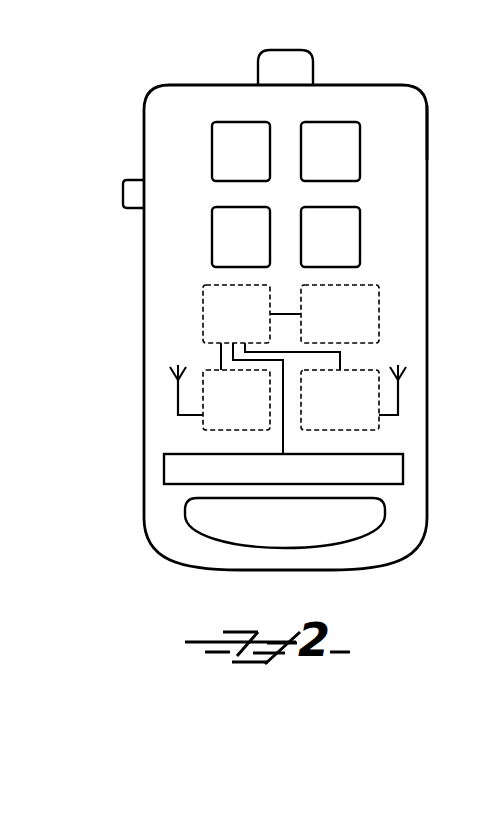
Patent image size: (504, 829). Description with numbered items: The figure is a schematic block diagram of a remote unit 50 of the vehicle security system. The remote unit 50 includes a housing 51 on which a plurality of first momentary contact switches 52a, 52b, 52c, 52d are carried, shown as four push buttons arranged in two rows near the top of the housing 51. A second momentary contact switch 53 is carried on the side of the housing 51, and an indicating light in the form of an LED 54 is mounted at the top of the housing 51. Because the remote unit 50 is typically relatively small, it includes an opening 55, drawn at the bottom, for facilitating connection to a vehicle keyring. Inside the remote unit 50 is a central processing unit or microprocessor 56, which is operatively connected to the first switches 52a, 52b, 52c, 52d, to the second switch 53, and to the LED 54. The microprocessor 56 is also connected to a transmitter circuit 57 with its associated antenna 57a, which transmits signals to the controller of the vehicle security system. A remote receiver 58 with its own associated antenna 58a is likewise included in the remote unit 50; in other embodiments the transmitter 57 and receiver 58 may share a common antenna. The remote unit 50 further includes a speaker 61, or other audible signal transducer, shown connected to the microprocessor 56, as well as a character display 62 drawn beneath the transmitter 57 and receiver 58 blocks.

The remote unit 50 is at (438, 81).
The housing 51 is at (428, 135).
The first momentary contact switch 52a is at (228, 122).
The first momentary contact switch 52b is at (335, 122).
The first momentary contact switch 52c is at (212, 221).
The first momentary contact switch 52d is at (360, 215).
The second momentary contact switch 53 is at (126, 180).
The LED 54 is at (290, 50).
The opening 55 is at (313, 527).
The microprocessor 56 is at (203, 300).
The transmitter circuit 57 is at (200, 428).
The antenna 57a is at (178, 402).
The remote receiver 58 is at (379, 428).
The antenna 58a is at (398, 395).
The speaker 61 is at (379, 308).
The character display 62 is at (403, 470).